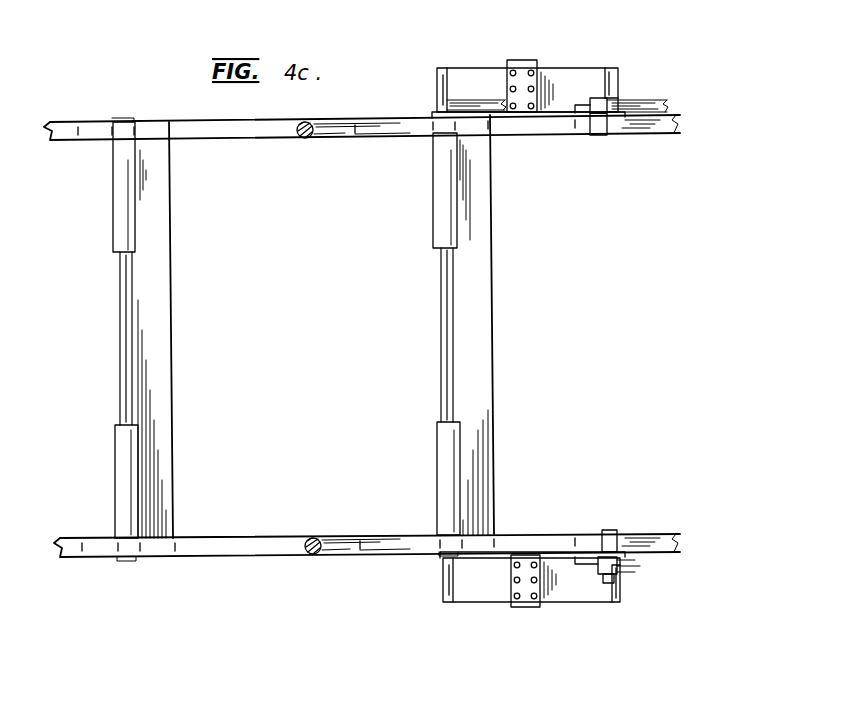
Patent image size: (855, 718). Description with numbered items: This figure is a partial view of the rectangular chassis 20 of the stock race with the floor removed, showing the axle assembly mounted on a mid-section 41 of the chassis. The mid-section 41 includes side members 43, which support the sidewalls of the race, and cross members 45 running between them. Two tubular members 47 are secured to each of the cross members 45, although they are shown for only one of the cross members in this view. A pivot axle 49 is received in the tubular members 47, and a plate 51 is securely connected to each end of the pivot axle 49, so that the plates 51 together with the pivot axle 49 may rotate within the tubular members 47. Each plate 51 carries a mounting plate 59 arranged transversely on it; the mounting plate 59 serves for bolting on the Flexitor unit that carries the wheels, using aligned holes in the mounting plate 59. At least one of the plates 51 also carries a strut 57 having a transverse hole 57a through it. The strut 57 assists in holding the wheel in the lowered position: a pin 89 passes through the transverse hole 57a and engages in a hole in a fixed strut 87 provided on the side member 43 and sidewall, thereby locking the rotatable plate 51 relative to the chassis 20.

The rectangular chassis 20 is at (200, 112).
The mid-section 41 is at (313, 339).
The side member 43 is at (570, 125).
The cross member 45 is at (156, 288).
The tubular member 47 is at (121, 199).
The pivot axle 49 is at (119, 322).
The plate 51 is at (479, 74).
The strut 57 is at (598, 105).
The transverse hole 57a is at (620, 566).
The mounting plate 59 is at (523, 62).
The fixed strut 87 is at (603, 132).
The pin 89 is at (607, 584).